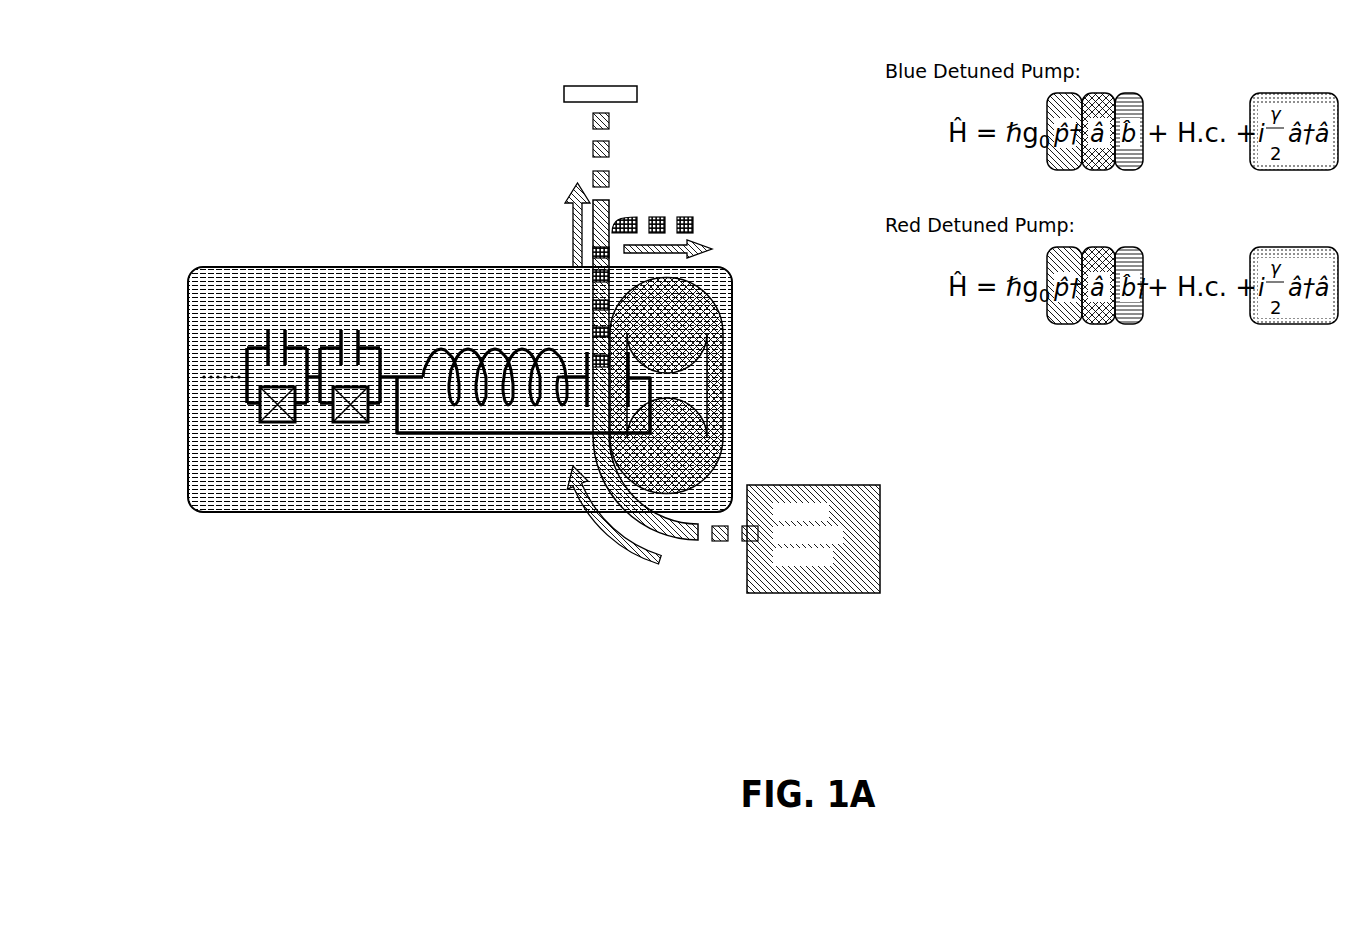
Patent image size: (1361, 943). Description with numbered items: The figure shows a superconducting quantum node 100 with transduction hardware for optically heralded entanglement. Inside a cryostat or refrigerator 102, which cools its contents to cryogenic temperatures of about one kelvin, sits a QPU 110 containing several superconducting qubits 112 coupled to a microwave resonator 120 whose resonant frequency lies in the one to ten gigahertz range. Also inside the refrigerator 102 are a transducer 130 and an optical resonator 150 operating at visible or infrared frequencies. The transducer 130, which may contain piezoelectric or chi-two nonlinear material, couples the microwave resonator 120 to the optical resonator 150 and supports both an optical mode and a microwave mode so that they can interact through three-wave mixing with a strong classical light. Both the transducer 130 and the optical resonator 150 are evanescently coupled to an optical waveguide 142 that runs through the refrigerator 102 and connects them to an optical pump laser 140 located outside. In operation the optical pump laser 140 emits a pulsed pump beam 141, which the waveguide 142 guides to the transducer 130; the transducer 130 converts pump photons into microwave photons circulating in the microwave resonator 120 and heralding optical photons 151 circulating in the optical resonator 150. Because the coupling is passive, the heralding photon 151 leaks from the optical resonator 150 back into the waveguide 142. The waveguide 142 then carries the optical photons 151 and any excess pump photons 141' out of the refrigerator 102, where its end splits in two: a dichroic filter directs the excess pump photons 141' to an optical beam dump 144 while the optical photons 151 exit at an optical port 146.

The node 100 is at (270, 126).
The refrigerator 102 is at (235, 512).
The QPU 110 is at (271, 491).
The qubits 112 is at (326, 293).
The microwave resonator 120 is at (487, 412).
The transducer 130 is at (637, 363).
The optical pump laser 140 is at (817, 593).
The pump beam 141 is at (613, 527).
The excess pump photons 141' is at (557, 225).
The optical waveguide 142 is at (668, 542).
The optical beam dump 144 is at (577, 123).
The optical port 146 is at (659, 184).
The optical resonator 150 is at (722, 420).
The optical photons 151 is at (690, 249).